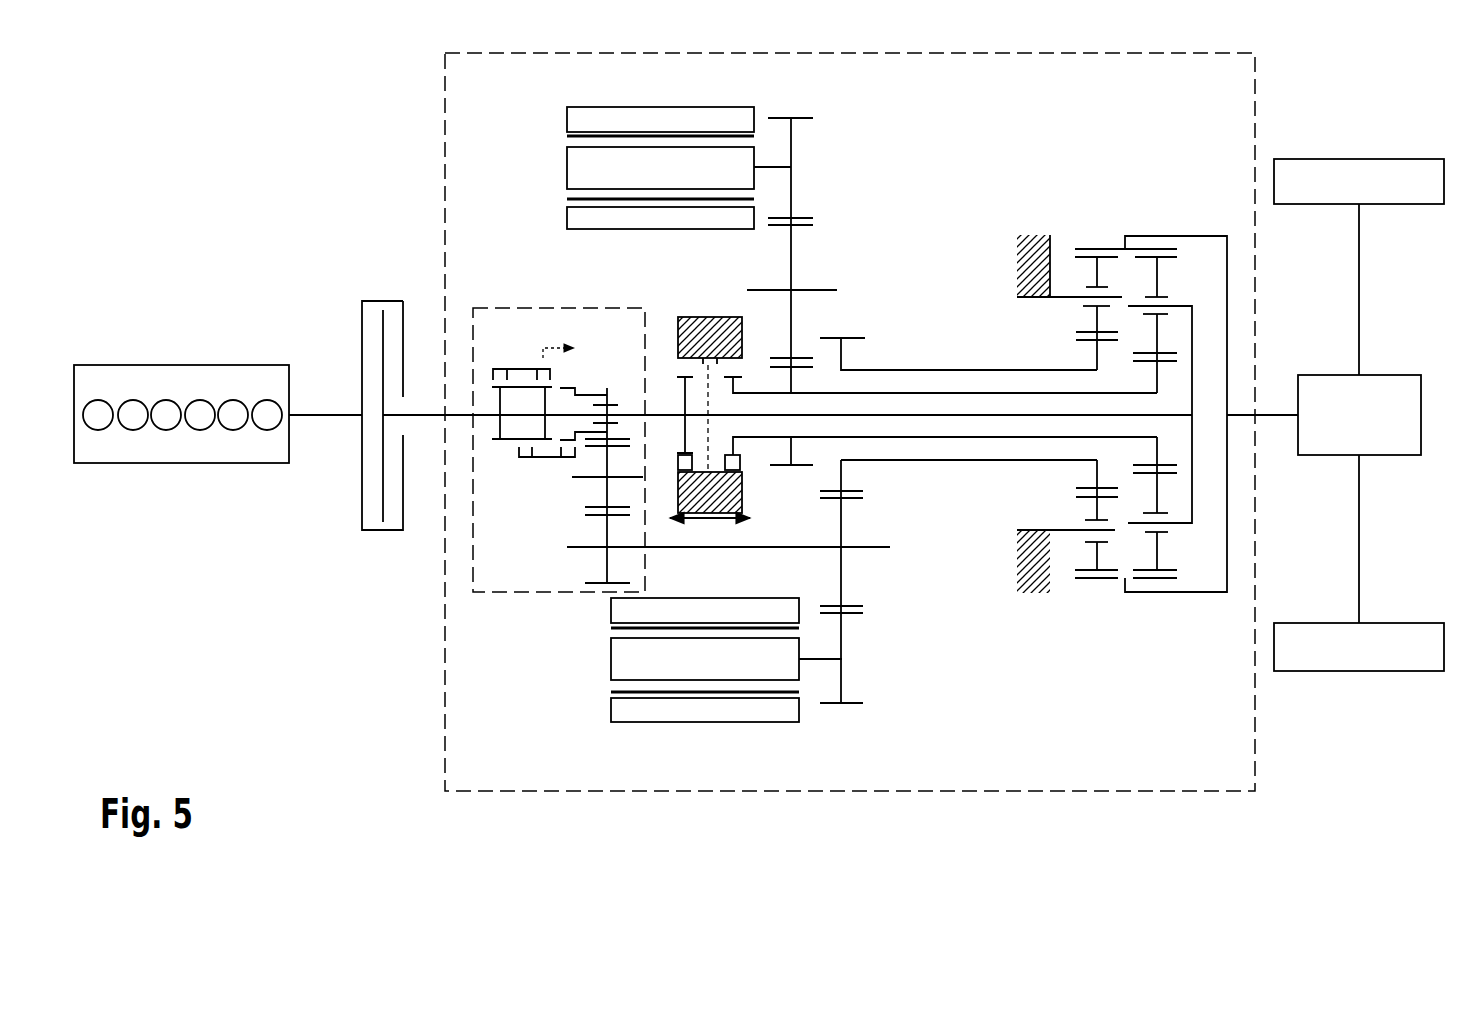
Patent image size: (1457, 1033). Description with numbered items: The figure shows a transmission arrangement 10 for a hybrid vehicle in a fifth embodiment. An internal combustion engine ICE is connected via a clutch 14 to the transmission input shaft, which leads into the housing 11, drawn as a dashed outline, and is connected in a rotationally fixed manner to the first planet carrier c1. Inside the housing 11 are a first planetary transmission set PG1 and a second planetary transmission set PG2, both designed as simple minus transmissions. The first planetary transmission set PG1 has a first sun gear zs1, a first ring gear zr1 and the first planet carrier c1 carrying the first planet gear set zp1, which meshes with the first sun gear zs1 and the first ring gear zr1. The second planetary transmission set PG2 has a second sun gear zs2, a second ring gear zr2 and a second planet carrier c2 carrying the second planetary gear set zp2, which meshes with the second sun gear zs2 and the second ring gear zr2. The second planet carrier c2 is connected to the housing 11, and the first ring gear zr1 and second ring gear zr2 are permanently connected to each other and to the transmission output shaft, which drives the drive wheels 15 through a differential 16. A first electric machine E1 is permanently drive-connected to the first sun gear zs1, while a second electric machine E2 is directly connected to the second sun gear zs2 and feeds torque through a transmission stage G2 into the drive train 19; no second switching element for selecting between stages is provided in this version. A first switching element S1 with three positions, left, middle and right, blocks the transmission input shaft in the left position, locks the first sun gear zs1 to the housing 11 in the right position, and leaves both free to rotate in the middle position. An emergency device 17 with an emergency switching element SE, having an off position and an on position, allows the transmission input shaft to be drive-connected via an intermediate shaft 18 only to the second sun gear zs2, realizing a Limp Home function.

The transmission arrangement 10 is at (432, 85).
The clutch 14 is at (377, 300).
The internal combustion engine ICE is at (205, 364).
The housing 11 is at (1033, 235).
The drive wheels 15 is at (1374, 660).
The differential 16 is at (1374, 430).
The emergency device 17 is at (559, 491).
The intermediate shaft 18 is at (738, 549).
The drive train 19 is at (976, 468).
The emergency switching element SE is at (510, 452).
The first switching element S1 is at (690, 296).
The first electric machine E1 is at (679, 168).
The second electric machine E2 is at (726, 660).
The transmission stage G2 is at (866, 679).
The first planetary transmission set PG1 is at (1227, 402).
The second planetary transmission set PG2 is at (1069, 402).
The first planet gear set zp1 is at (1157, 277).
The first sun gear zs1 is at (1157, 455).
The first ring gear zr1 is at (1170, 580).
The first planet carrier c1 is at (1192, 332).
The second planetary gear set zp2 is at (1097, 310).
The second sun gear zs2 is at (1097, 345).
The second ring gear zr2 is at (1100, 580).
The second planet carrier c2 is at (1060, 530).